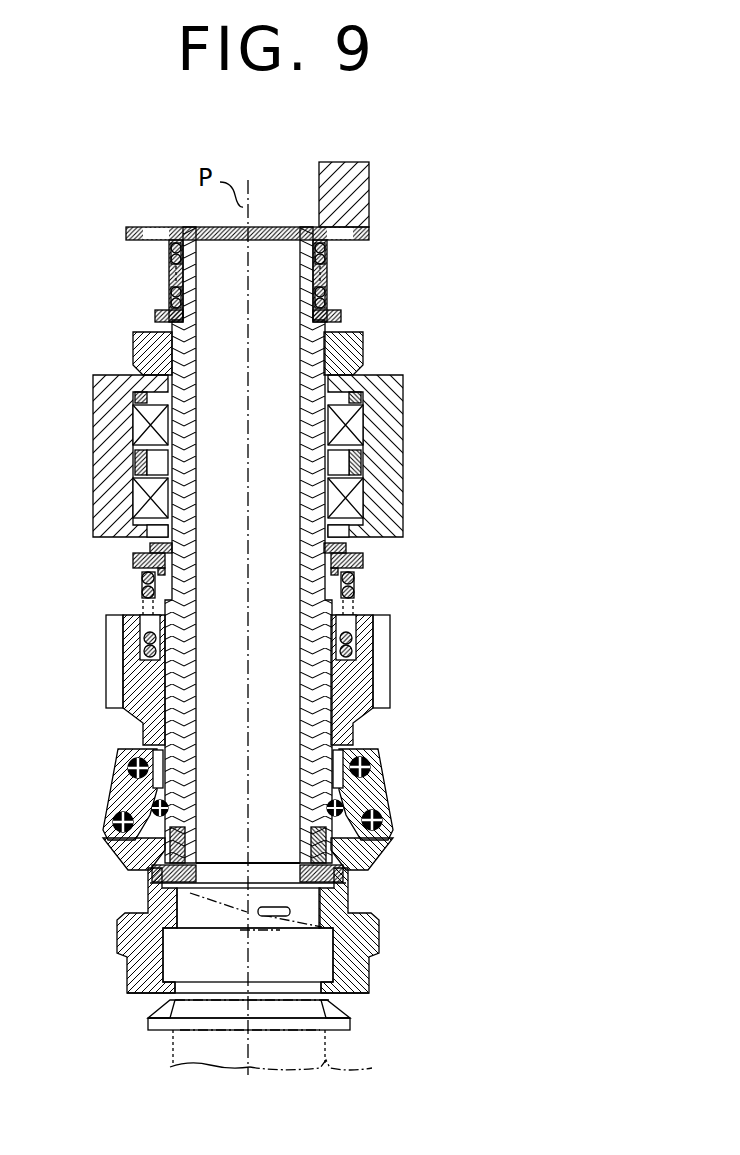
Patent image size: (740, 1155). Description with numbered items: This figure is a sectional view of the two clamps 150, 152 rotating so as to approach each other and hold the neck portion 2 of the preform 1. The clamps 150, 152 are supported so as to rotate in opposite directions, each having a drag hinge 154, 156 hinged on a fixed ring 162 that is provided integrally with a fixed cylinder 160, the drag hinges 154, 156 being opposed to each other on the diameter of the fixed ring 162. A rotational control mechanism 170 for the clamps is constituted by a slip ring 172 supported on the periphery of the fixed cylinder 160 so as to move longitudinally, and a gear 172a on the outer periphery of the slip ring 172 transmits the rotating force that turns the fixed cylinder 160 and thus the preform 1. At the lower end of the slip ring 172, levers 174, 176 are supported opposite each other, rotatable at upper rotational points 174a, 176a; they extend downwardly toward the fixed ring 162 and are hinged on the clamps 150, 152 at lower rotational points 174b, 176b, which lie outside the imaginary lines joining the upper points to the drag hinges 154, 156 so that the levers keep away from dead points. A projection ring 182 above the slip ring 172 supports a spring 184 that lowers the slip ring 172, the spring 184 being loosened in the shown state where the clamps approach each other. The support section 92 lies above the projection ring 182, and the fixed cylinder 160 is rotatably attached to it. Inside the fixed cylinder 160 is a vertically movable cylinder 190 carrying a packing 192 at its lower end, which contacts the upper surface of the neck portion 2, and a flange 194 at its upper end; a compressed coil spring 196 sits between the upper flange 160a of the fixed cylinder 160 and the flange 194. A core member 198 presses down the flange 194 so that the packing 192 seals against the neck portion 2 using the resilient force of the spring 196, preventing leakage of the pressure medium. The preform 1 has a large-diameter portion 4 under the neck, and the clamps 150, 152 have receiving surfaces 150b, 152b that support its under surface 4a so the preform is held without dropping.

The preform 1 is at (280, 1054).
The neck portion 2 is at (128, 932).
The large-diameter portion 4 is at (385, 978).
The under surface 4a is at (238, 985).
The support section 92 is at (95, 440).
The clamp 150 is at (127, 930).
The receiving surface 150b is at (160, 996).
The clamp 152 is at (378, 940).
The receiving surface 152b is at (335, 996).
The drag hinge 154 is at (120, 860).
The drag hinge 156 is at (345, 808).
The fixed cylinder 160 is at (322, 663).
The upper flange 160a is at (340, 316).
The fixed ring 162 is at (375, 855).
The rotational control mechanism 170 is at (204, 662).
The slip ring 172 is at (140, 718).
The gear 172a is at (115, 625).
The lever 174 is at (110, 790).
The upper rotational point 174a is at (128, 762).
The lower rotational point 174b is at (112, 822).
The lever 176 is at (372, 770).
The upper rotational point 176a is at (380, 752).
The lower rotational point 176b is at (385, 826).
The projection ring 182 is at (365, 560).
The spring 184 is at (355, 585).
The movable cylinder 190 is at (176, 290).
The packing 192 is at (350, 885).
The flange 194 is at (370, 237).
The compressed coil spring 196 is at (172, 253).
The core member 198 is at (370, 188).